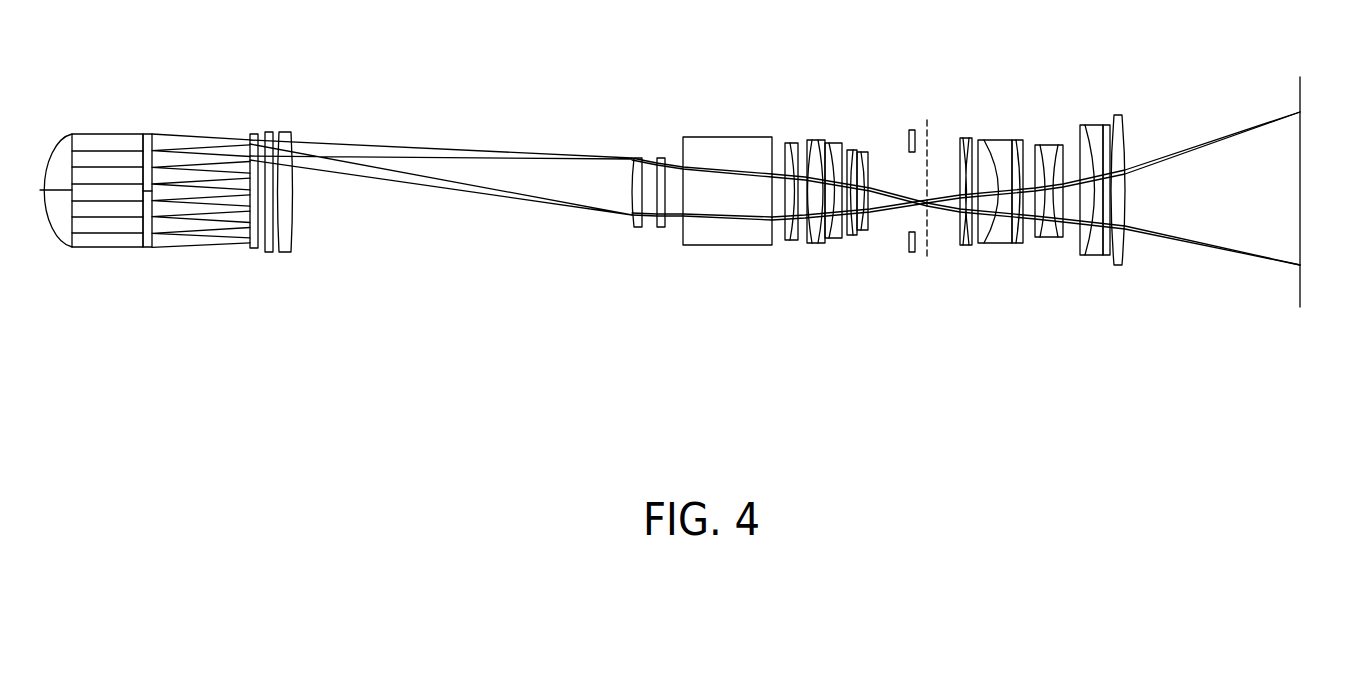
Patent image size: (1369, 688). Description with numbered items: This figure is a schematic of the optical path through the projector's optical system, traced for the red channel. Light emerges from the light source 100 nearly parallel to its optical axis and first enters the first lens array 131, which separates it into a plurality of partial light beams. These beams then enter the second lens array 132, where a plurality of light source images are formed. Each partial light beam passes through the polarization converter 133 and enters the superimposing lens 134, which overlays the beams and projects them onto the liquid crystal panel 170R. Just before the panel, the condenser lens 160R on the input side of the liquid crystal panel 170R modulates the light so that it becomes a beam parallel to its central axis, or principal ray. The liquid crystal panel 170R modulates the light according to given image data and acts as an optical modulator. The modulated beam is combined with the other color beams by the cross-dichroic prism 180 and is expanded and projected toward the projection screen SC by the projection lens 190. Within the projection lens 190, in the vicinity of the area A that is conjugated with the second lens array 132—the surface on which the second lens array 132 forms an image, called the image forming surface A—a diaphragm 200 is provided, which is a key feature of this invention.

The light source 100 is at (58, 135).
The first lens array 131 is at (148, 133).
The second lens array 132 is at (254, 134).
The polarization converter 133 is at (268, 132).
The superimposing lens 134 is at (289, 131).
The condenser lens 160R is at (635, 157).
The liquid crystal panel 170R is at (660, 157).
The cross-dichroic prism 180 is at (748, 137).
The projection lens 190 is at (1133, 268).
The diaphragm 200 is at (912, 129).
The image forming surface A is at (929, 125).
The projection screen SC is at (1302, 285).